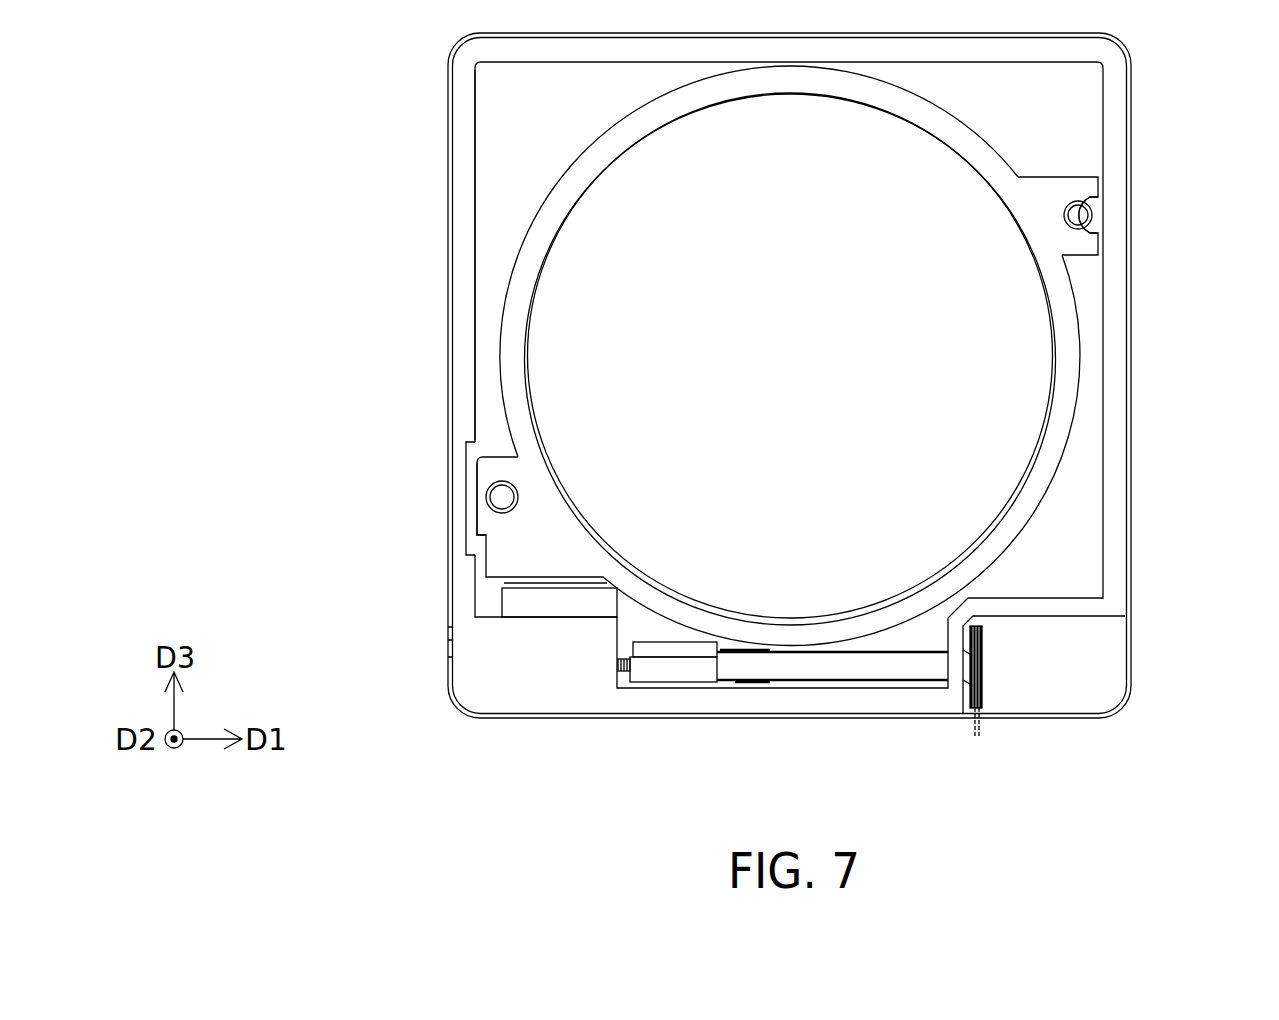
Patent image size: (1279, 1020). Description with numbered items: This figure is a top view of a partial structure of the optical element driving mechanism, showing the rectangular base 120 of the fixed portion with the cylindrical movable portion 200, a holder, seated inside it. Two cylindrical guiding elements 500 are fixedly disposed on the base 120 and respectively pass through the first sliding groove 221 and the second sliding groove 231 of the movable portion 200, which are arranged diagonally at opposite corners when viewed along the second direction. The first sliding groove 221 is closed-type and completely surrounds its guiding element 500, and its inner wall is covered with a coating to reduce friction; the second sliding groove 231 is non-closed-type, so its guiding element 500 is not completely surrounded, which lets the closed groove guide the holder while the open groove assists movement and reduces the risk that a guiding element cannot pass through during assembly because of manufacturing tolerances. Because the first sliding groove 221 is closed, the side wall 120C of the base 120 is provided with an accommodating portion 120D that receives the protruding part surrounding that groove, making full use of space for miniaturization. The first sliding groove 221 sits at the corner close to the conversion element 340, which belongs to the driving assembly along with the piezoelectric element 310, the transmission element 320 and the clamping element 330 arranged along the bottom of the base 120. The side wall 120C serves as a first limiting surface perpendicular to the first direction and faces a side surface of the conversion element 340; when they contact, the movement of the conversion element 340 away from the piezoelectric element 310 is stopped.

The base 120 is at (625, 702).
The side wall 120C is at (488, 250).
The accommodating portion 120D is at (472, 452).
The movable portion 200 is at (1072, 376).
The second sliding groove 231 is at (1097, 204).
The first sliding groove 221 is at (487, 516).
The guiding element 500 is at (502, 497).
The conversion element 340 is at (532, 602).
The clamping element 330 is at (688, 668).
The transmission element 320 is at (841, 665).
The piezoelectric element 310 is at (982, 675).